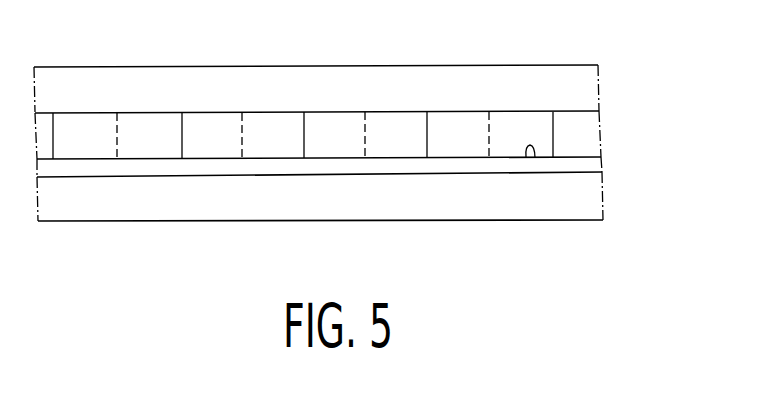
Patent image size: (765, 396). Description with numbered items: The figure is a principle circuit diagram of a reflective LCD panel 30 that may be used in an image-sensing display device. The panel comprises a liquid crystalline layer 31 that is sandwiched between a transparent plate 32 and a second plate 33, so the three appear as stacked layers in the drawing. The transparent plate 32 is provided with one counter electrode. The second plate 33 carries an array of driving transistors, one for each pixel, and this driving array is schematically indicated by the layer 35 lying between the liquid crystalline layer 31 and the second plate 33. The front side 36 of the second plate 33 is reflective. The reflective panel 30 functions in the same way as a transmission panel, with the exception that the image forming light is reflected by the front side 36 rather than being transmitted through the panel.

The reflective LCD panel 30 is at (538, 32).
The liquid crystalline layer 31 is at (589, 132).
The transparent plate 32 is at (589, 81).
The second plate 33 is at (589, 203).
The layer 35 is at (589, 168).
The front side 36 is at (535, 158).